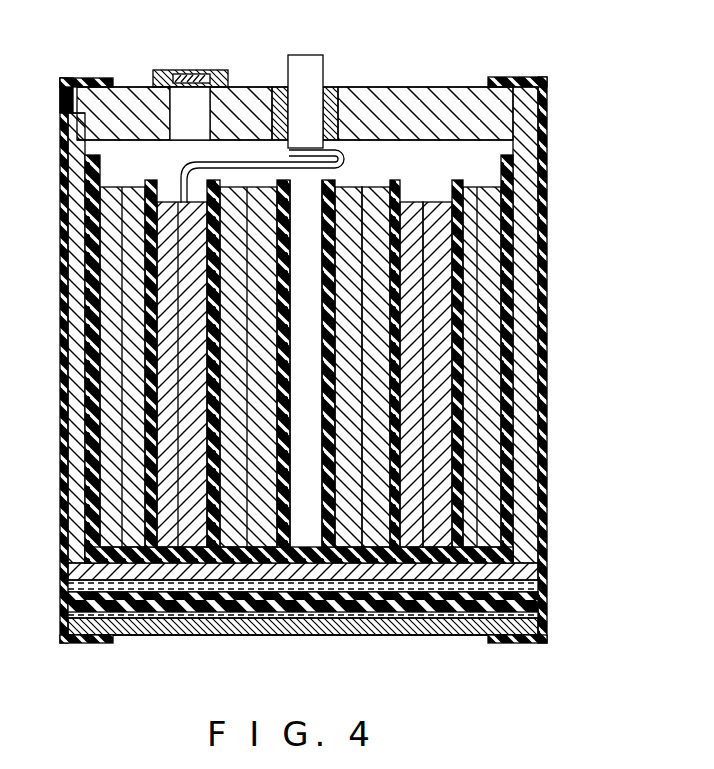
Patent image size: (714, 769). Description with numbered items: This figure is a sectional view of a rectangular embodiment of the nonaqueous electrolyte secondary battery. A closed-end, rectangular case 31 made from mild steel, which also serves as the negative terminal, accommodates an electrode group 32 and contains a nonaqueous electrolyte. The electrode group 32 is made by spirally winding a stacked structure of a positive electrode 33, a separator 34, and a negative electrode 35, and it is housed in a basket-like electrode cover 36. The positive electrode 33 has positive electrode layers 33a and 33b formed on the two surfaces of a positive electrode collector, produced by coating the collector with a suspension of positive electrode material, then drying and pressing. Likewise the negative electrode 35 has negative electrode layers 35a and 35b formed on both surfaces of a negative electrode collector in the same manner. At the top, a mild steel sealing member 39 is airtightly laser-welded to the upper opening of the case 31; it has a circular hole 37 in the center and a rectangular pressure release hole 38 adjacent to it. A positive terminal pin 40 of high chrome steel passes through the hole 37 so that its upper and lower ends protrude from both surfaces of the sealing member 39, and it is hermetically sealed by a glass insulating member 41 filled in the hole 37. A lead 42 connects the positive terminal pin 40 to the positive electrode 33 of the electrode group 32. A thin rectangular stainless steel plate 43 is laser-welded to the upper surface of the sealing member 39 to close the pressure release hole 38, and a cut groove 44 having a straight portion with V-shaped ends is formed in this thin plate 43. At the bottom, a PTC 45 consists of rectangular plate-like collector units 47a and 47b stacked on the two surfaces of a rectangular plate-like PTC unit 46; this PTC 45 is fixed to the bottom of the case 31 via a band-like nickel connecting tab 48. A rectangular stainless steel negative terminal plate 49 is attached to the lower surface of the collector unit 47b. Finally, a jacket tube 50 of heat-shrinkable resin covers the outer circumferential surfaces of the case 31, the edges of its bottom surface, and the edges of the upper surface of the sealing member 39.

The case 31 is at (379, 359).
The electrode group 32 is at (478, 171).
The positive electrode 33 is at (386, 367).
The positive electrode layer 33a is at (415, 286).
The positive electrode layer 33b is at (440, 311).
The separator 34 is at (467, 368).
The negative electrode 35 is at (415, 374).
The negative electrode layer 35a is at (492, 419).
The negative electrode layer 35b is at (500, 445).
The electrode cover 36 is at (512, 232).
The circular hole 37 is at (348, 100).
The pressure release hole 38 is at (208, 100).
The sealing member 39 is at (445, 95).
The positive terminal pin 40 is at (308, 55).
The glass insulating member 41 is at (332, 90).
The lead 42 is at (350, 158).
The thin plate 43 is at (215, 70).
The cut groove 44 is at (165, 70).
The PTC 45 is at (371, 602).
The PTC unit 46 is at (545, 604).
The collector unit 47a is at (545, 581).
The collector unit 47b is at (344, 630).
The connecting tab 48 is at (143, 612).
The negative terminal plate 49 is at (330, 612).
The jacket tube 50 is at (62, 322).